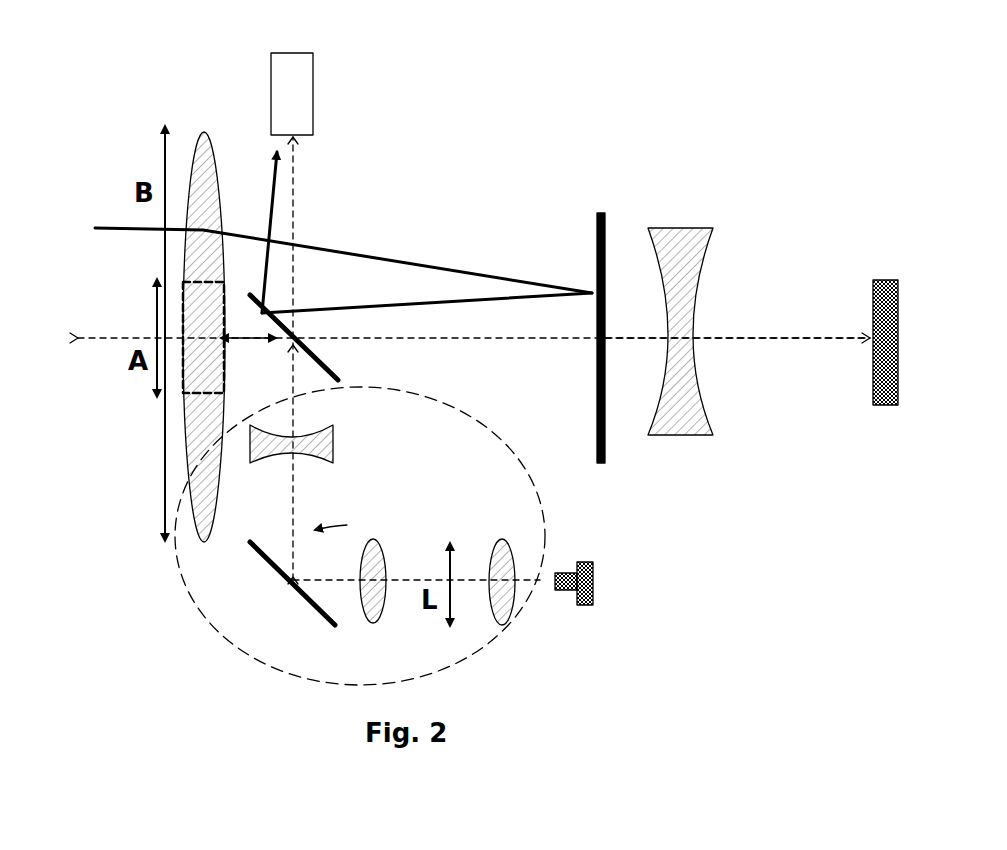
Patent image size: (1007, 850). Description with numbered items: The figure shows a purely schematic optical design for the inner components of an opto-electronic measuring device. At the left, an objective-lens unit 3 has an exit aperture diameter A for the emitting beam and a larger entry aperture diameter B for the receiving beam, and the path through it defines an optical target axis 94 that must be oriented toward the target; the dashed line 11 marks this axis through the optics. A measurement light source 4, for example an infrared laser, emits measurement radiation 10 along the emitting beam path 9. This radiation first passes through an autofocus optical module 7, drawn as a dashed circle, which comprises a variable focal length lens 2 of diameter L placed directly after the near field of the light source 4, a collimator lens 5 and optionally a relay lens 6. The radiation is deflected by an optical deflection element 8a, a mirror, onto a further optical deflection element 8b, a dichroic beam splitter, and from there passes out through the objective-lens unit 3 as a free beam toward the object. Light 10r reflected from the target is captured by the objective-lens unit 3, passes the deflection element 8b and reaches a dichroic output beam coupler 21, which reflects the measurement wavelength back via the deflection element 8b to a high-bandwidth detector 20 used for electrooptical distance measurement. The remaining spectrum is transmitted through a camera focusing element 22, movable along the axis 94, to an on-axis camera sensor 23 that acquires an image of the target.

The variable focal length lens 2 is at (502, 575).
The objective-lens unit 3 is at (174, 305).
The measurement light source 4 is at (600, 604).
The collimator lens 5 is at (373, 590).
The relay lens 6 is at (317, 455).
The autofocus optical module 7 is at (477, 422).
The optical deflection element 8a is at (317, 610).
The further optical deflection element 8b is at (338, 380).
The emitting beam path 9 is at (346, 524).
The measurement radiation 10 is at (324, 360).
The reflected light 10r is at (297, 198).
The optical axis 11 is at (442, 340).
The high-bandwidth detector 20 is at (308, 83).
The dichroic output beam coupler 21 is at (602, 213).
The camera focusing element 22 is at (711, 346).
The on-axis camera sensor 23 is at (856, 279).
The optical target axis 94 is at (457, 315).